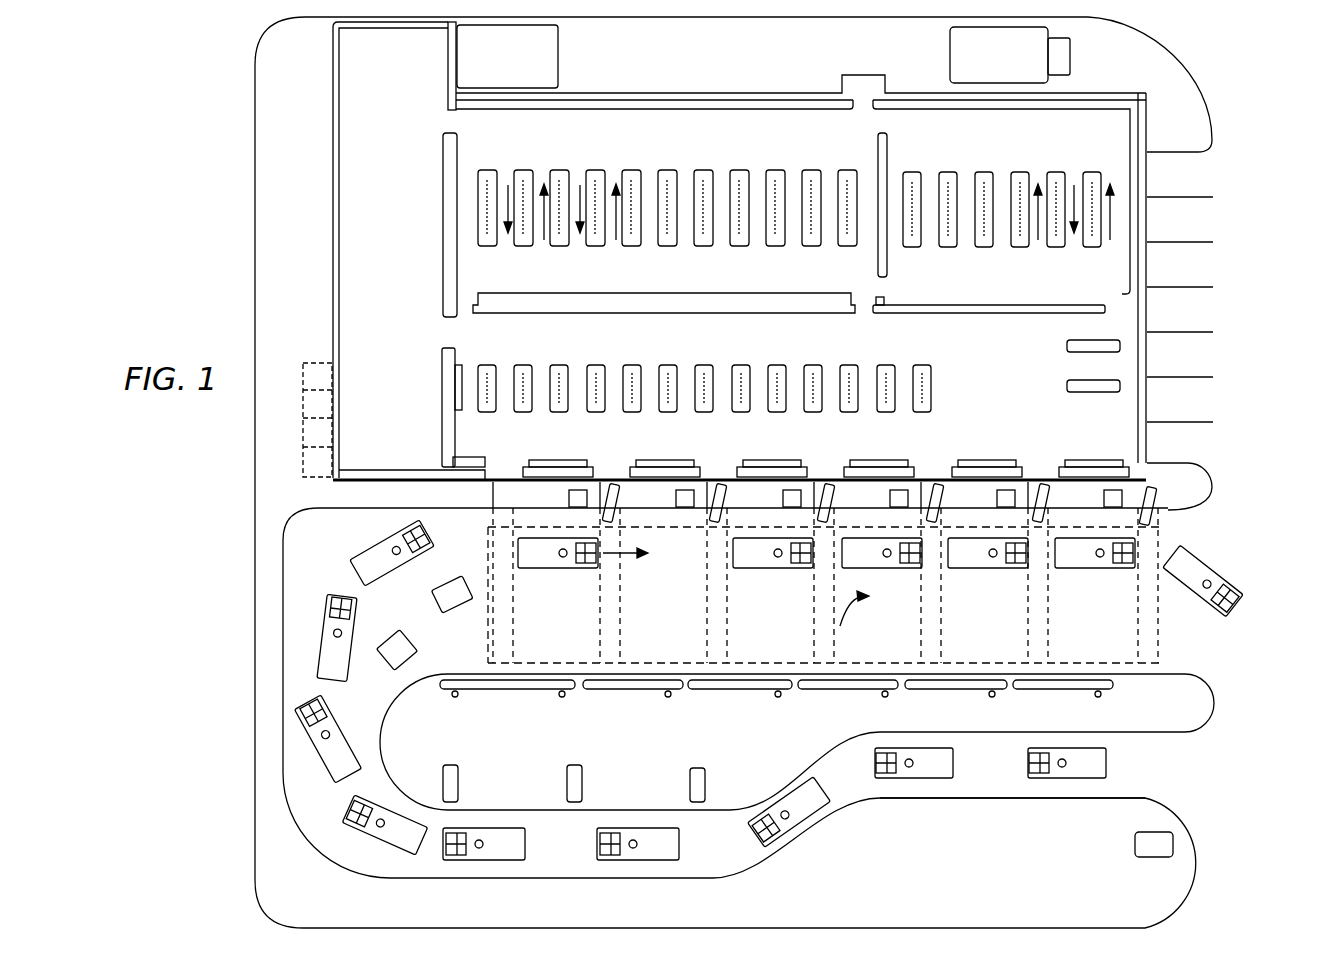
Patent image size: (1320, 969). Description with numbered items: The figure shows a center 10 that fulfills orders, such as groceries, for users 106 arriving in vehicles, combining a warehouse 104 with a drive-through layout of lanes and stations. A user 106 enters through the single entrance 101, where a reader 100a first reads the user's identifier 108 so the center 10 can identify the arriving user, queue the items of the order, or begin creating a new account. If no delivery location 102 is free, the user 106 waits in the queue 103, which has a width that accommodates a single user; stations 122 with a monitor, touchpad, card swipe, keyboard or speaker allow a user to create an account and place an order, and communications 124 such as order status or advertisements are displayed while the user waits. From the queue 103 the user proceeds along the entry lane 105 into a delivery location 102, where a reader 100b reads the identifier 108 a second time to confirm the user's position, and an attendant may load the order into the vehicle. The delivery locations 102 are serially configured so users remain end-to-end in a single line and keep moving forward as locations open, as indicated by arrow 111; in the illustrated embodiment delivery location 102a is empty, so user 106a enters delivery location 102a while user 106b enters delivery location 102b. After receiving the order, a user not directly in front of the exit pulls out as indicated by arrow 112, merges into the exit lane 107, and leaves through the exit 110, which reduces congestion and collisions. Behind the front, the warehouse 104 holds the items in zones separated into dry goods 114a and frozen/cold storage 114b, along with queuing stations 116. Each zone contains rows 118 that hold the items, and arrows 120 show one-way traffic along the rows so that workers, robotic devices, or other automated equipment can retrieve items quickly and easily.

The center 10 is at (214, 144).
The reader 100a is at (1153, 857).
The reader 100b is at (568, 460).
The entrance 101 is at (1188, 788).
The delivery location 102 is at (743, 520).
The delivery location 102a is at (653, 560).
The delivery location 102b is at (528, 513).
The queue 103 is at (1188, 748).
The warehouse 104 is at (1157, 313).
The entry lane 105 is at (684, 594).
The user 106 is at (753, 570).
The user 106a is at (540, 570).
The user 106b is at (372, 556).
The exit lane 107 is at (1148, 642).
The identifier 108 is at (565, 560).
The exit 110 is at (1242, 637).
The arrow 111 is at (627, 548).
The arrow 112 is at (846, 621).
The dry goods 114a is at (855, 280).
The frozen/cold storage 114b is at (1012, 153).
The queuing station 116 is at (690, 350).
The row 118 is at (631, 170).
The arrow 120 is at (508, 185).
The station 122 is at (453, 613).
The communication 124 is at (613, 486).